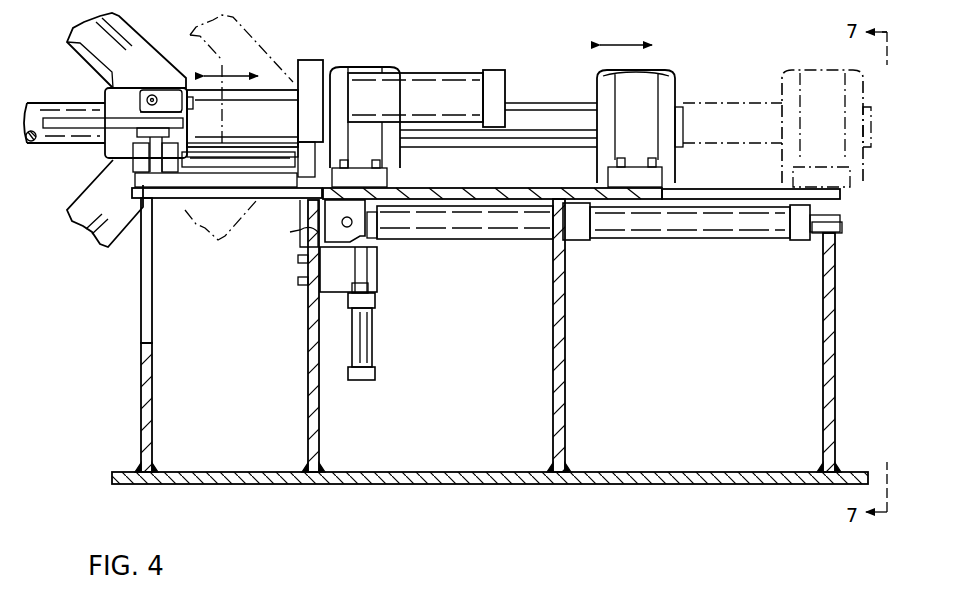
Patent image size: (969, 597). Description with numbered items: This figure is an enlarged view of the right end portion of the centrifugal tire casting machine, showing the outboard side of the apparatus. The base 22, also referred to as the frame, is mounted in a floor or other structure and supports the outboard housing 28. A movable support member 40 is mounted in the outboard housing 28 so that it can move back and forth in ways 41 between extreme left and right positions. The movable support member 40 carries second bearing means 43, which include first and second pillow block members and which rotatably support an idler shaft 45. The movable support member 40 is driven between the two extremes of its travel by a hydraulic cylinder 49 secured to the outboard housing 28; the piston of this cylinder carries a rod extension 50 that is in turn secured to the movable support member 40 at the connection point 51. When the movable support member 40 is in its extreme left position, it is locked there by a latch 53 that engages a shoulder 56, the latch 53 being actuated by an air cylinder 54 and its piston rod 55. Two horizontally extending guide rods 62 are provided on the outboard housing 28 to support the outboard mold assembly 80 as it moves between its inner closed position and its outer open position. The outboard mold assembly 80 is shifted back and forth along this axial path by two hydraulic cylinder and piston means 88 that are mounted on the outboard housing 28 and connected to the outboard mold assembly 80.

The base 22 is at (690, 472).
The outboard housing 28 is at (850, 324).
The movable support member 40 is at (540, 190).
The ways 41 is at (752, 200).
The second bearing means 43 is at (370, 66).
The idler shaft 45 is at (547, 103).
The hydraulic cylinder 49 is at (668, 228).
The rod extension 50 is at (468, 224).
The connection point 51 is at (352, 223).
The latch 53 is at (370, 262).
The air cylinder 54 is at (372, 346).
The piston rod 55 is at (378, 284).
The shoulder 56 is at (320, 232).
The guide rods 62 is at (280, 160).
The outboard mold assembly 80 is at (158, 40).
The hydraulic cylinder and piston means 88 is at (438, 73).